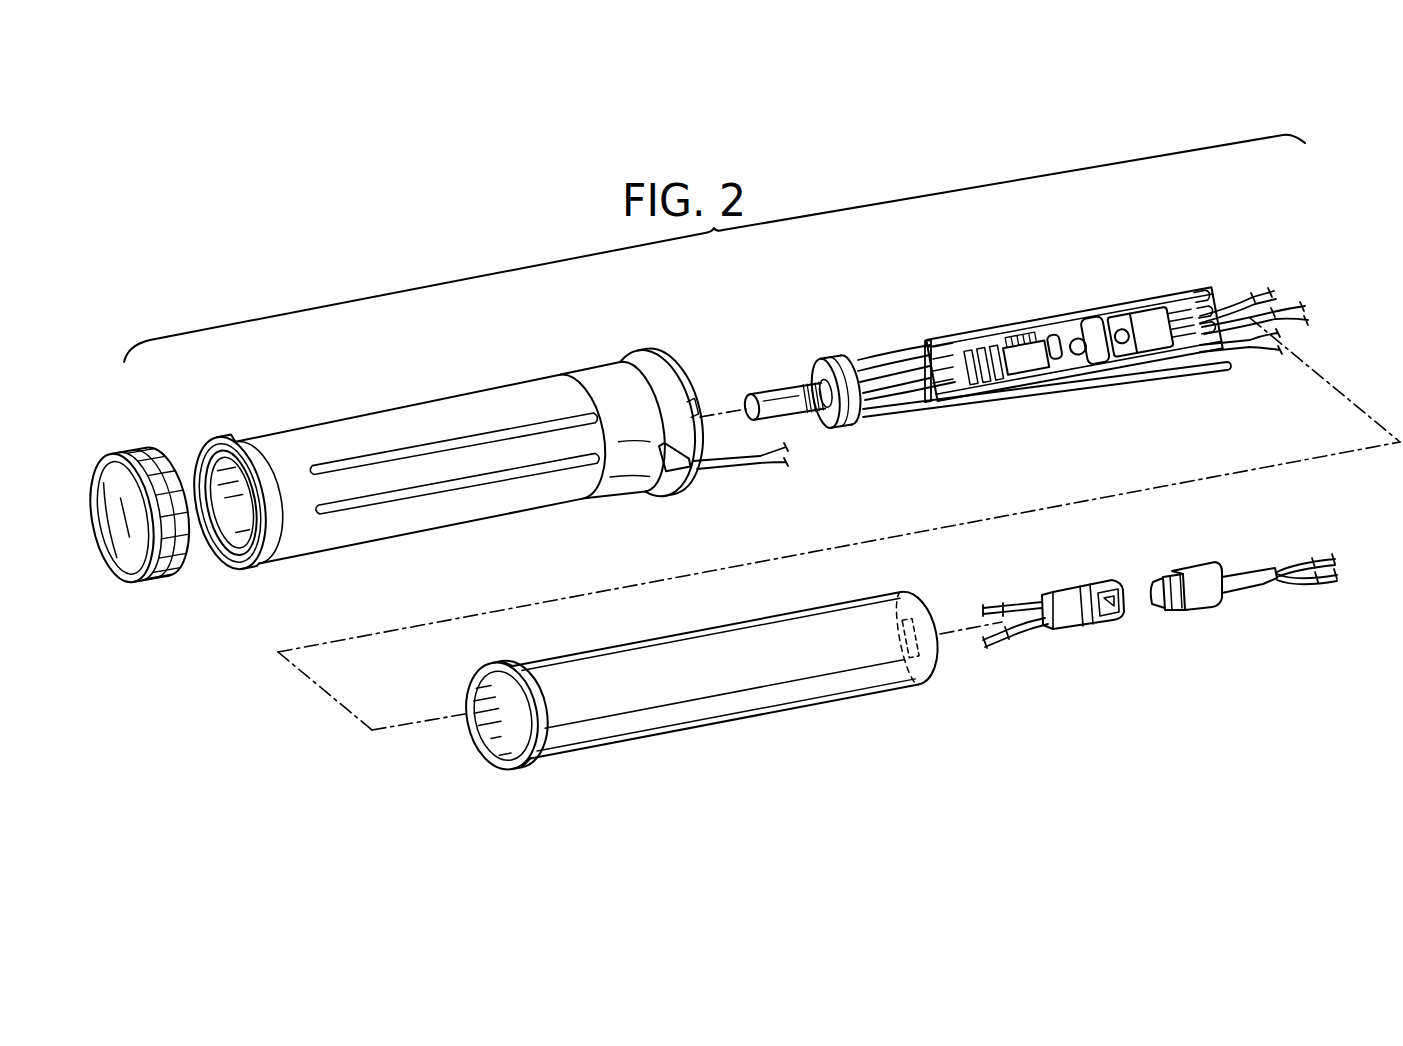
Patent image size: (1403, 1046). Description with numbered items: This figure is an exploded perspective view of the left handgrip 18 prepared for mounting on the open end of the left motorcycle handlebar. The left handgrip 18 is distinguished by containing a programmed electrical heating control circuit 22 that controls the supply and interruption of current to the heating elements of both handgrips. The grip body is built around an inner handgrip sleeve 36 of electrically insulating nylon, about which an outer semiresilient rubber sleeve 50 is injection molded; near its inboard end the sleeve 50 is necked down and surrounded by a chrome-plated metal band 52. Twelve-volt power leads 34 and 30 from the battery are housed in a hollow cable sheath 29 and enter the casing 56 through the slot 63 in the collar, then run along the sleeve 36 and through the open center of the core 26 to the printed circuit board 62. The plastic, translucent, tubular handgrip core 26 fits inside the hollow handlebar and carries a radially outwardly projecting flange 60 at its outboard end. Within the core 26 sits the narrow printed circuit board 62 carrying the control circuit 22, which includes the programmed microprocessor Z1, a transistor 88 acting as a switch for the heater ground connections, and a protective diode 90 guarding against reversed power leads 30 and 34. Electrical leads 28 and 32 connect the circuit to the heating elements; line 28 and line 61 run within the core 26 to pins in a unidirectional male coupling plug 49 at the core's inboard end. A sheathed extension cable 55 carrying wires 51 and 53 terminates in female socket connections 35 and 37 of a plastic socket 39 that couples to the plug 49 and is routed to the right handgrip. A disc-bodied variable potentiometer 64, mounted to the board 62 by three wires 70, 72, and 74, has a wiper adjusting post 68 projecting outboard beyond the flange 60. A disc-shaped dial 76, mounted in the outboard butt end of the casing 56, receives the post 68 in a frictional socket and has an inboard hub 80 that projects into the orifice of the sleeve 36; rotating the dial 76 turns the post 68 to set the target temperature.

The left handgrip 18 is at (273, 718).
The programmed electrical heating control circuit 22 is at (1075, 378).
The handgrip core 26 is at (730, 620).
The electrical lead 28 is at (1237, 307).
The cable sheath 29 is at (727, 470).
The power input line 30 is at (790, 472).
The electrical lead 32 is at (1290, 313).
The power input line 34 is at (869, 368).
The female socket connection 35 is at (1152, 590).
The inner handgrip sleeve 36 is at (222, 464).
The female socket connection 37 is at (1153, 603).
The female socket 39 is at (231, 543).
The male coupling plug 49 is at (1092, 638).
The outer sleeve 50 is at (437, 517).
The extension wire 51 is at (1300, 567).
The metal band 52 is at (608, 385).
The extension wire 53 is at (1307, 587).
The sheathed extension cable 55 is at (1252, 580).
The grip casing 56 is at (384, 392).
The core flange 60 is at (473, 685).
The line 61 is at (1010, 628).
The printed circuit board 62 is at (1035, 312).
The slot 63 is at (694, 482).
The variable potentiometer 64 is at (829, 352).
The wiper adjusting post 68 is at (785, 393).
The wire 70 is at (918, 362).
The wire 72 is at (931, 373).
The wire 74 is at (922, 400).
The dial 76 is at (158, 600).
The inboard hub 80 is at (170, 487).
The transistor 88 is at (1150, 325).
The protective diode 90 is at (1213, 298).
The microprocessor Z1 is at (1022, 375).